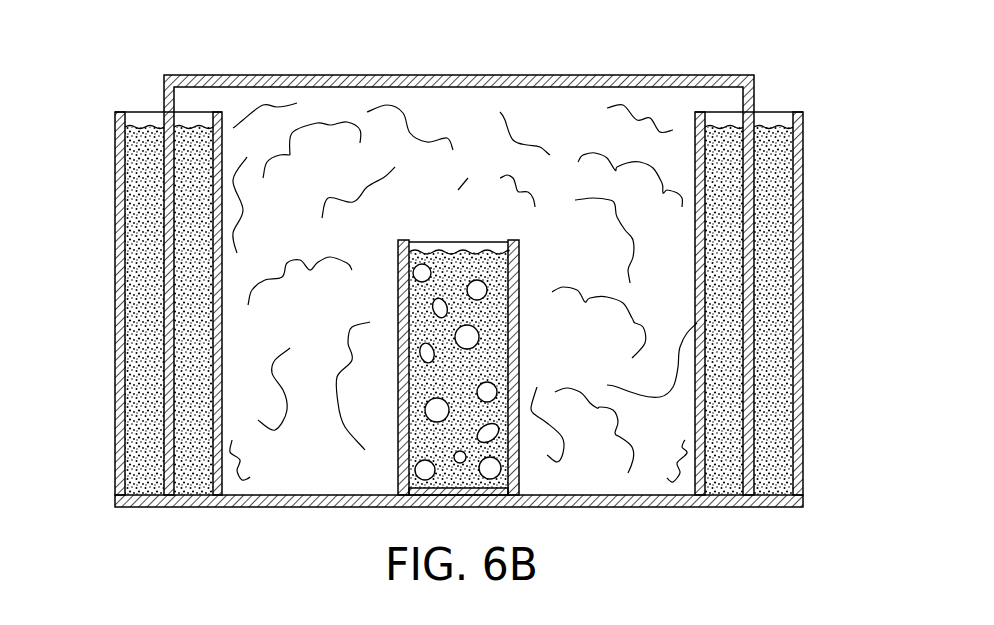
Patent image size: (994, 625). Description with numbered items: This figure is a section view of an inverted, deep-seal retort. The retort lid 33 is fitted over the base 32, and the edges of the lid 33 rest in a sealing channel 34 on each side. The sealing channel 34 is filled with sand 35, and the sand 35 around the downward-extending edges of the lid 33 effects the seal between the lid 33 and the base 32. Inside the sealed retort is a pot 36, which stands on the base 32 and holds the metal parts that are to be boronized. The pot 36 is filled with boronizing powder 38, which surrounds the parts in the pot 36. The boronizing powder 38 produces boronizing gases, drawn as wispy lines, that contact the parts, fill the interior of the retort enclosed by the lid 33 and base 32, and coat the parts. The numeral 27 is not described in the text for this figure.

The void 27 is at (420, 354).
The base 32 is at (614, 503).
The retort lid 33 is at (326, 104).
The sealing channel 34 is at (115, 117).
The sand 35 is at (788, 162).
The pots 36 is at (408, 367).
The boronizing powder 38 is at (424, 438).